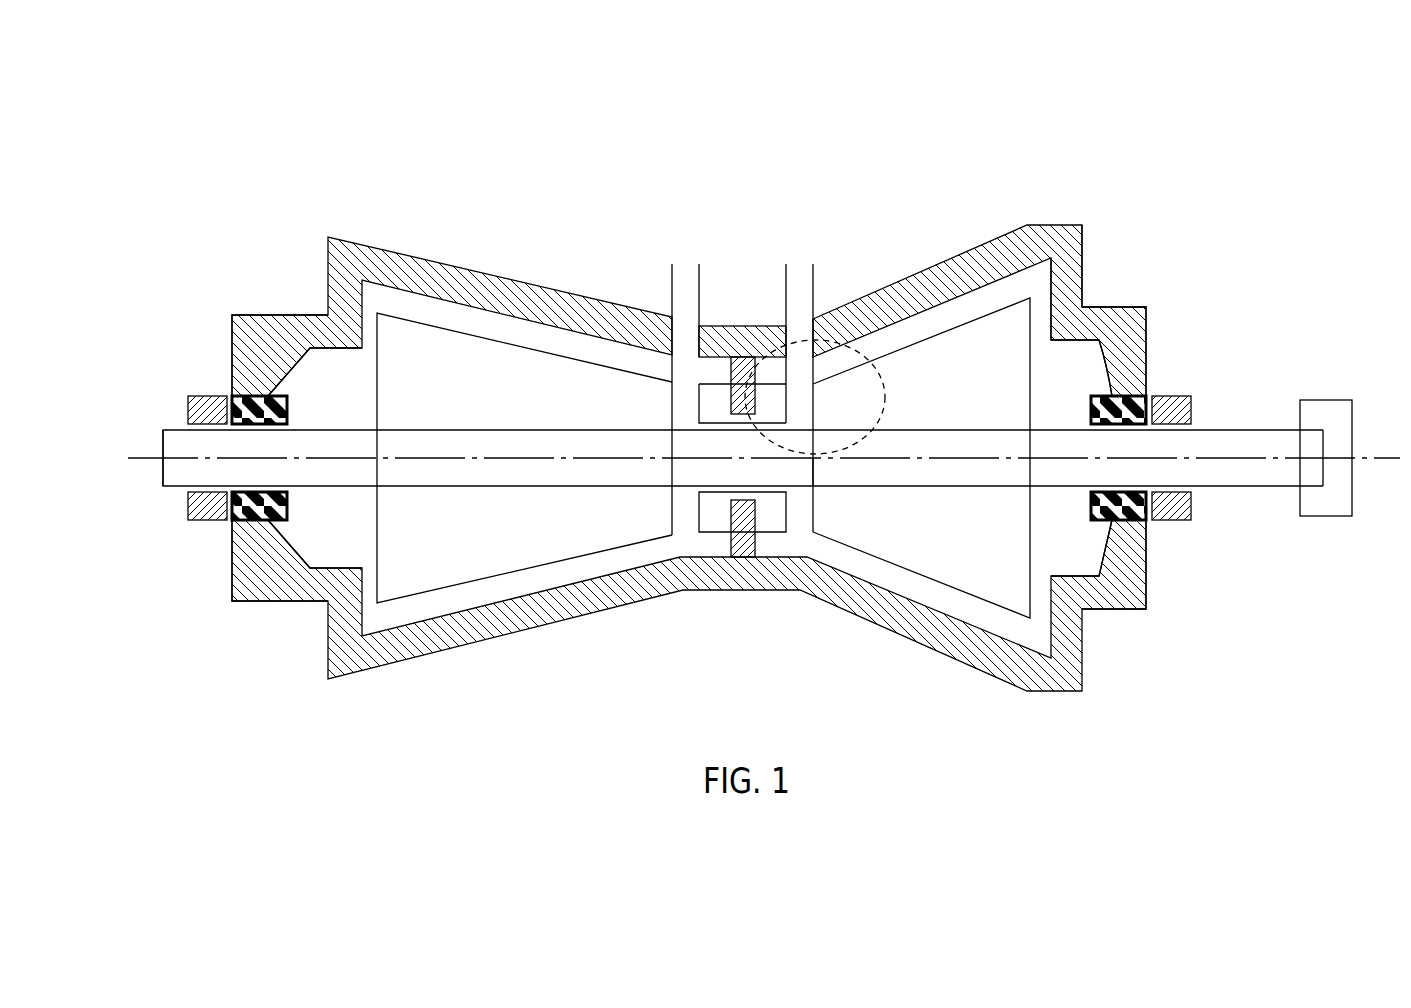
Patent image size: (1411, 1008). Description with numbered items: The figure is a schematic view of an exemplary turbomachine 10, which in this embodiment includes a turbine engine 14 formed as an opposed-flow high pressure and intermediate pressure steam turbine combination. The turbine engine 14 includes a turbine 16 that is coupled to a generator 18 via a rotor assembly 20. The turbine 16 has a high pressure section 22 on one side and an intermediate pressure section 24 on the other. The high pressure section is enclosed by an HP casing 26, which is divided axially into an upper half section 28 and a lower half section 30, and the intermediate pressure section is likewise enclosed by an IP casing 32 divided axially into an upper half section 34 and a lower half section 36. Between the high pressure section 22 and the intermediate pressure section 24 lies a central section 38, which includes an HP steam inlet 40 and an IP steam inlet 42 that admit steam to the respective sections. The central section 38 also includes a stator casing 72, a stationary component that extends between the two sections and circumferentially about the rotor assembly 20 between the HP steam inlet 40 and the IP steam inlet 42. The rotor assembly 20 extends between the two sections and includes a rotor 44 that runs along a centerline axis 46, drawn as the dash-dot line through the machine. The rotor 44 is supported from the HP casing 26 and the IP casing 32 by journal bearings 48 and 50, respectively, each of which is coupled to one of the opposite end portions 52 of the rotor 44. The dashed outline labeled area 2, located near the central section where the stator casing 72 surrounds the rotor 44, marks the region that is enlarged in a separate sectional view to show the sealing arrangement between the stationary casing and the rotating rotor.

The turbomachine 10 is at (1117, 170).
The turbine engine 14 is at (1165, 225).
The turbine 16 is at (878, 247).
The generator 18 is at (1326, 400).
The rotor assembly 20 is at (1236, 430).
The high pressure (HP) section 22 is at (990, 241).
The intermediate pressure (IP) section 24 is at (468, 270).
The HP casing 26 is at (1083, 272).
The upper half section 28 is at (1148, 320).
The lower half section 30 is at (1148, 578).
The IP casing 32 is at (352, 242).
The upper half section 34 is at (262, 313).
The lower half section 36 is at (276, 603).
The central section 38 is at (752, 250).
The HP steam inlet 40 is at (803, 268).
The IP steam inlet 42 is at (683, 266).
The rotor 44 is at (803, 483).
The centerline axis 46 is at (138, 457).
The journal bearing 48 is at (1172, 394).
The journal bearing 50 is at (190, 521).
The end portions 52 is at (200, 553).
The stator casing 72 is at (768, 392).
The area 2 is at (885, 403).